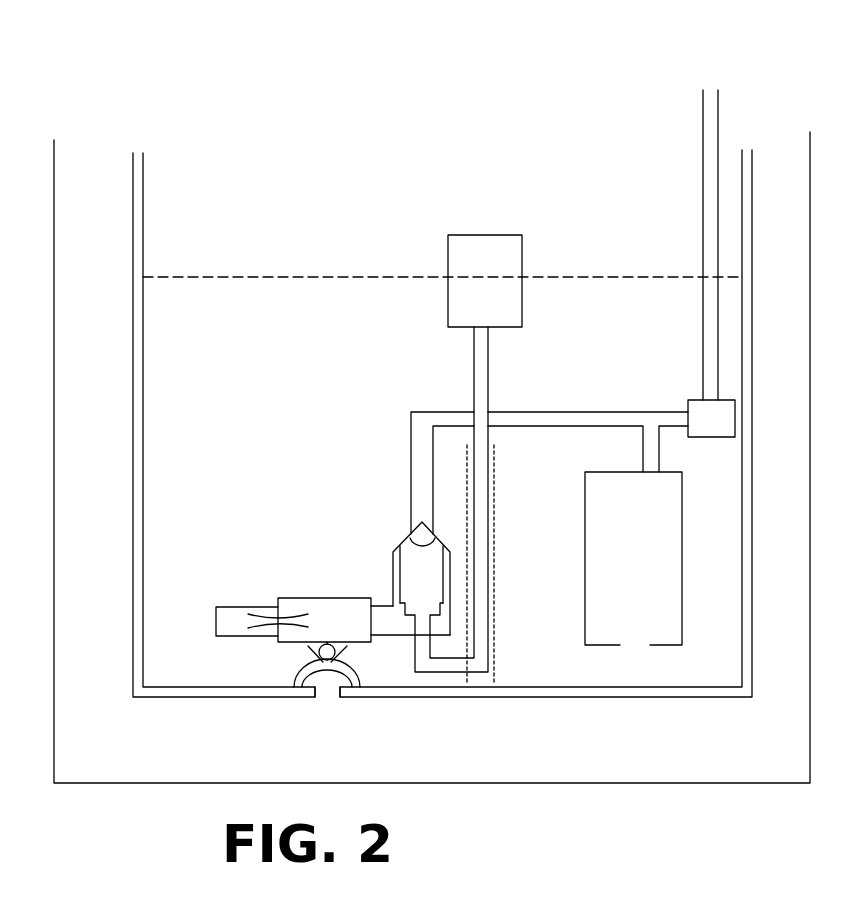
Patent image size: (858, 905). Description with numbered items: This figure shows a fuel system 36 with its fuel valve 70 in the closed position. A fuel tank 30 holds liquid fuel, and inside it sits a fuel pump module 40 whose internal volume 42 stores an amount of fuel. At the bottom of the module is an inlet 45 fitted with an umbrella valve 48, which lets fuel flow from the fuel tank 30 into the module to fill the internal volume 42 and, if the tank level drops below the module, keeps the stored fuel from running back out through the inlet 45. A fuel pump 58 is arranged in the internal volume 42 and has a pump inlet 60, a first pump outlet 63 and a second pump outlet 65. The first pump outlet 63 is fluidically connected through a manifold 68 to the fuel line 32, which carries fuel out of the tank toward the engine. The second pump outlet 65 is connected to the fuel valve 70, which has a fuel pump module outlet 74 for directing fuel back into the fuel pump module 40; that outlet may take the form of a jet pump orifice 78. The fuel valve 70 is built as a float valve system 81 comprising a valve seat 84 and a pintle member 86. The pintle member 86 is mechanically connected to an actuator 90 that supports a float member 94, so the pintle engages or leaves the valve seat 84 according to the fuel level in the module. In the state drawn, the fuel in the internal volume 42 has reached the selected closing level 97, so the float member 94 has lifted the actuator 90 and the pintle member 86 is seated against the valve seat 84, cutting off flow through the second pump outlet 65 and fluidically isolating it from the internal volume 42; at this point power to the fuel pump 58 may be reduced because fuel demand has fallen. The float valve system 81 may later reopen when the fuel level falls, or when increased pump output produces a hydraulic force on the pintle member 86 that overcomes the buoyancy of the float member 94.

The fuel tank 30 is at (57, 156).
The fuel line 32 is at (713, 110).
The fuel system 36 is at (737, 226).
The fuel pump module 40 is at (131, 500).
The internal volume 42 is at (167, 366).
The inlet 45 is at (320, 694).
The umbrella valve 48 is at (303, 672).
The fuel pump 58 is at (686, 606).
The pump inlet 60 is at (620, 646).
The first pump outlet 63 is at (673, 422).
The second pump outlet 65 is at (612, 420).
The manifold 68 is at (698, 410).
The fuel valve 70 is at (317, 582).
The fuel pump module outlet 74 is at (213, 606).
The jet pump orifice 78 is at (278, 612).
The float valve system 81 is at (387, 538).
The valve seat 84 is at (442, 545).
The pintle member 86 is at (417, 590).
The actuator 90 is at (478, 353).
The float member 94 is at (433, 222).
The selected closing level 97 is at (250, 277).